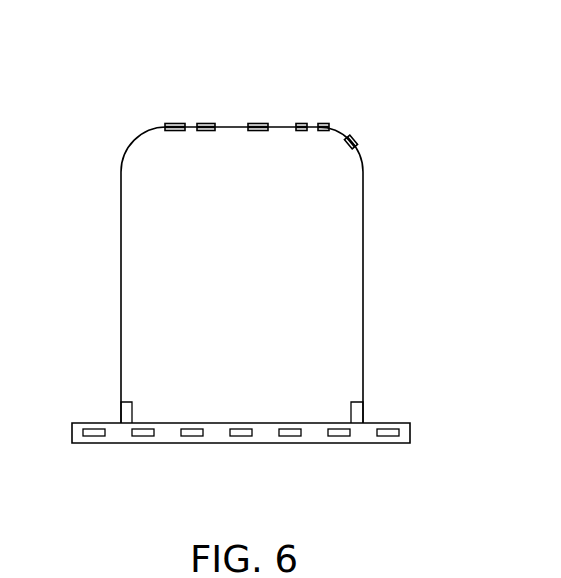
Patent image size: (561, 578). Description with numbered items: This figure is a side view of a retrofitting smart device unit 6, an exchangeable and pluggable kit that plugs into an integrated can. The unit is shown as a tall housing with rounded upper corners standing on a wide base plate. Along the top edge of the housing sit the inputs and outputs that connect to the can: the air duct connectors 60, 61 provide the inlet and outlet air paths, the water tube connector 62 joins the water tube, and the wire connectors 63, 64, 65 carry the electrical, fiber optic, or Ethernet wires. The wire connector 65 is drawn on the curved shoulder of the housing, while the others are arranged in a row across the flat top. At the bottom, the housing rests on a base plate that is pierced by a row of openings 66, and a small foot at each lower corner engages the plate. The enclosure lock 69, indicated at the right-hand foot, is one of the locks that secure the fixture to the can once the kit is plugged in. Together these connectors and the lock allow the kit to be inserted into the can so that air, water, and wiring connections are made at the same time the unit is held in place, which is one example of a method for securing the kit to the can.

The hanging bag / bag assembly 6 is at (370, 224).
The air duct connector 60 is at (258, 120).
The air duct connector 61 is at (207, 120).
The water tube connector 62 is at (175, 120).
The wire connector 63 is at (301, 120).
The wire connector 64 is at (323, 123).
The wire connector 65 is at (352, 137).
The slot 66 is at (341, 440).
The enclosure lock 69 is at (370, 405).